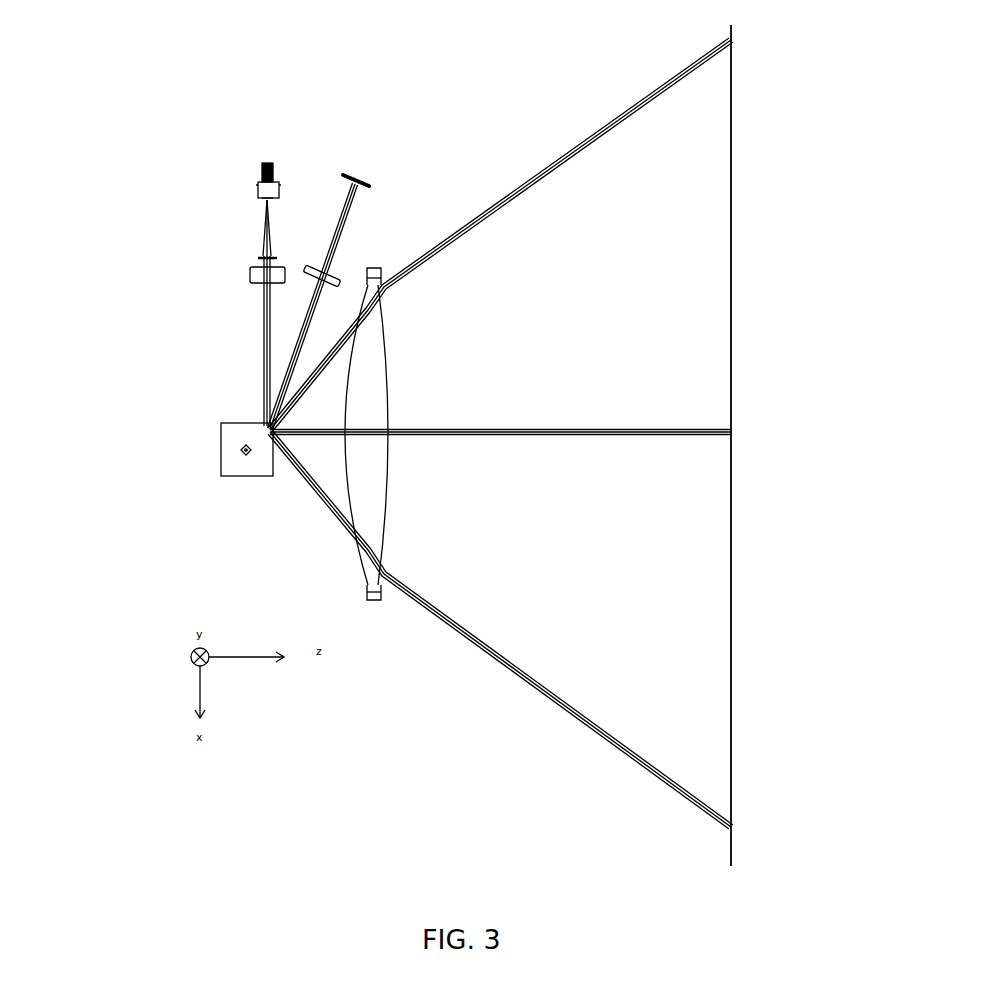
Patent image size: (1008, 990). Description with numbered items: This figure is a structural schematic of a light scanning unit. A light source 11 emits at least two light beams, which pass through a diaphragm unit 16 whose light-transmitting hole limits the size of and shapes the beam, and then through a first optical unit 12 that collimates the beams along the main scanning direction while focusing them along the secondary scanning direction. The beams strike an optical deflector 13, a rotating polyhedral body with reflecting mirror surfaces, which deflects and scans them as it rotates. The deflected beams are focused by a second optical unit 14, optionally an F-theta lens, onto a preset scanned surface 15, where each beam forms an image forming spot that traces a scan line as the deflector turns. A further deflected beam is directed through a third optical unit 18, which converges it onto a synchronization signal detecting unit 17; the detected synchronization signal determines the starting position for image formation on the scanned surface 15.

The light source 11 is at (257, 195).
The first optical unit 12 is at (252, 279).
The optical deflector 13 is at (232, 442).
The second optical unit 14 is at (390, 348).
The scanned surface 15 is at (727, 380).
The diaphragm unit 16 is at (256, 258).
The synchronization signal detecting unit 17 is at (347, 173).
The third optical unit 18 is at (310, 270).